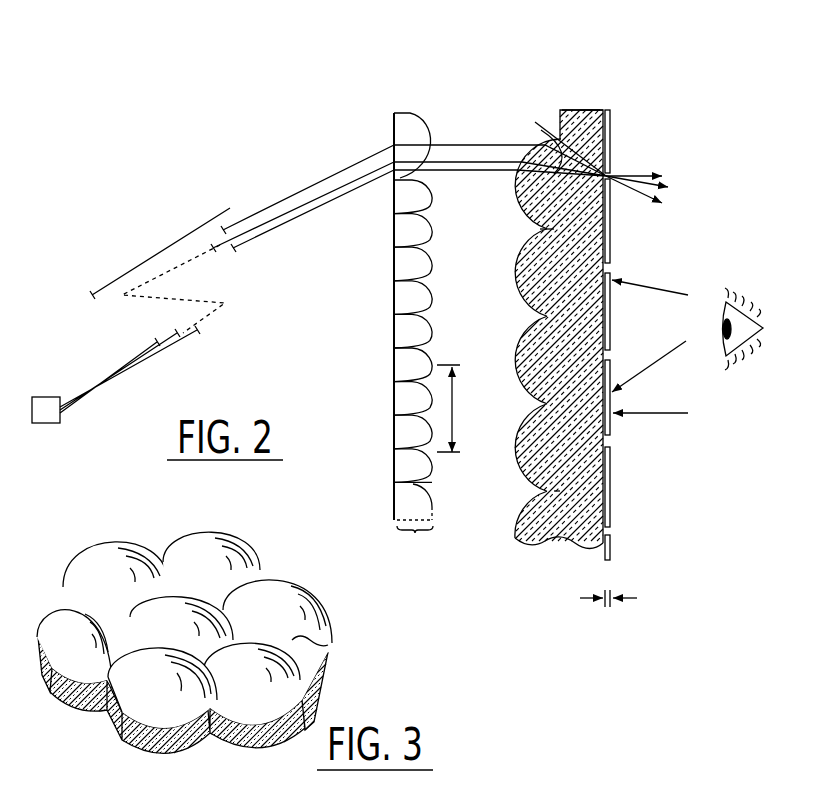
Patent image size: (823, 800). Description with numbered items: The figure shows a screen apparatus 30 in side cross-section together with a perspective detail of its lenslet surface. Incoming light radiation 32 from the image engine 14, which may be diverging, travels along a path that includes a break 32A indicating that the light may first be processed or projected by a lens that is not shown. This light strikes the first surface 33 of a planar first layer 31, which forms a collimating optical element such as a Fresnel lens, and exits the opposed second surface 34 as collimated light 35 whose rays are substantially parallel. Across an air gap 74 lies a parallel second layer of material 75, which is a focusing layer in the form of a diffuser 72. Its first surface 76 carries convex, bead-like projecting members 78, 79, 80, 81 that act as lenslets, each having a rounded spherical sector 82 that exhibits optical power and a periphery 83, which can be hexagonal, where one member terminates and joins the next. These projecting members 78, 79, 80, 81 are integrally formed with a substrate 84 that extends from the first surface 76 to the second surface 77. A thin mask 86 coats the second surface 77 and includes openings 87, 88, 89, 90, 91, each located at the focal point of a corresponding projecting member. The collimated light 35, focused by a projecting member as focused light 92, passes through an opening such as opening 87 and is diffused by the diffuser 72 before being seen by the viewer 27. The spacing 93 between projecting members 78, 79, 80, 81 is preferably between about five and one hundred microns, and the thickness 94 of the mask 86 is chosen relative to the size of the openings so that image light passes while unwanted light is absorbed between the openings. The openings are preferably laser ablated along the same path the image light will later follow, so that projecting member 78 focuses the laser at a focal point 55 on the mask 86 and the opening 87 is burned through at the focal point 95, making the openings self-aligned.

In FIG. 2, the image engine 14 is at (45, 423).
In FIG. 2, the viewer 27 is at (722, 297).
In FIG. 2, the screen apparatus 30 is at (437, 78).
In FIG. 2, the first layer 31 is at (415, 542).
In FIG. 2, the incoming light radiation 32 is at (313, 205).
In FIG. 2, the break in the light path 32A is at (166, 251).
In FIG. 2, the first surface 33 is at (432, 316).
In FIG. 2, the second surface 34 is at (432, 507).
In FIG. 2, the collimated light 35 is at (446, 167).
In FIG. 2, the focal point 55 is at (606, 176).
In FIG. 2, the diffuser 72 is at (594, 110).
In FIG. 2, the air gap 74 is at (511, 589).
In FIG. 2, the second layer of material 75 is at (574, 110).
In FIG. 2, the first surface 76 is at (558, 110).
In FIG. 2, the second surface 77 is at (609, 110).
In FIG. 2, the projecting member 78 is at (517, 205).
In FIG. 3, the projecting member 78 is at (214, 577).
In FIG. 2, the projecting member 79 is at (517, 268).
In FIG. 3, the projecting member 79 is at (188, 639).
In FIG. 2, the projecting member 80 is at (517, 360).
In FIG. 3, the projecting member 80 is at (165, 693).
In FIG. 2, the projecting member 81 is at (517, 450).
In FIG. 2, the spherical sector 82 is at (521, 238).
In FIG. 3, the spherical sector 82 is at (95, 637).
In FIG. 2, the periphery 83 is at (608, 318).
In FIG. 3, the periphery 83 is at (85, 688).
In FIG. 2, the substrate 84 is at (573, 525).
In FIG. 2, the mask 86 is at (613, 486).
In FIG. 2, the opening 87 is at (611, 182).
In FIG. 2, the opening 88 is at (615, 267).
In FIG. 2, the opening 89 is at (615, 350).
In FIG. 2, the opening 90 is at (615, 440).
In FIG. 2, the opening 91 is at (617, 528).
In FIG. 2, the focused light 92 is at (556, 134).
In FIG. 2, the spacing of projecting members 93 is at (453, 410).
In FIG. 2, the thickness of the mask 94 is at (595, 601).
In FIG. 2, the focal point 95 is at (617, 153).